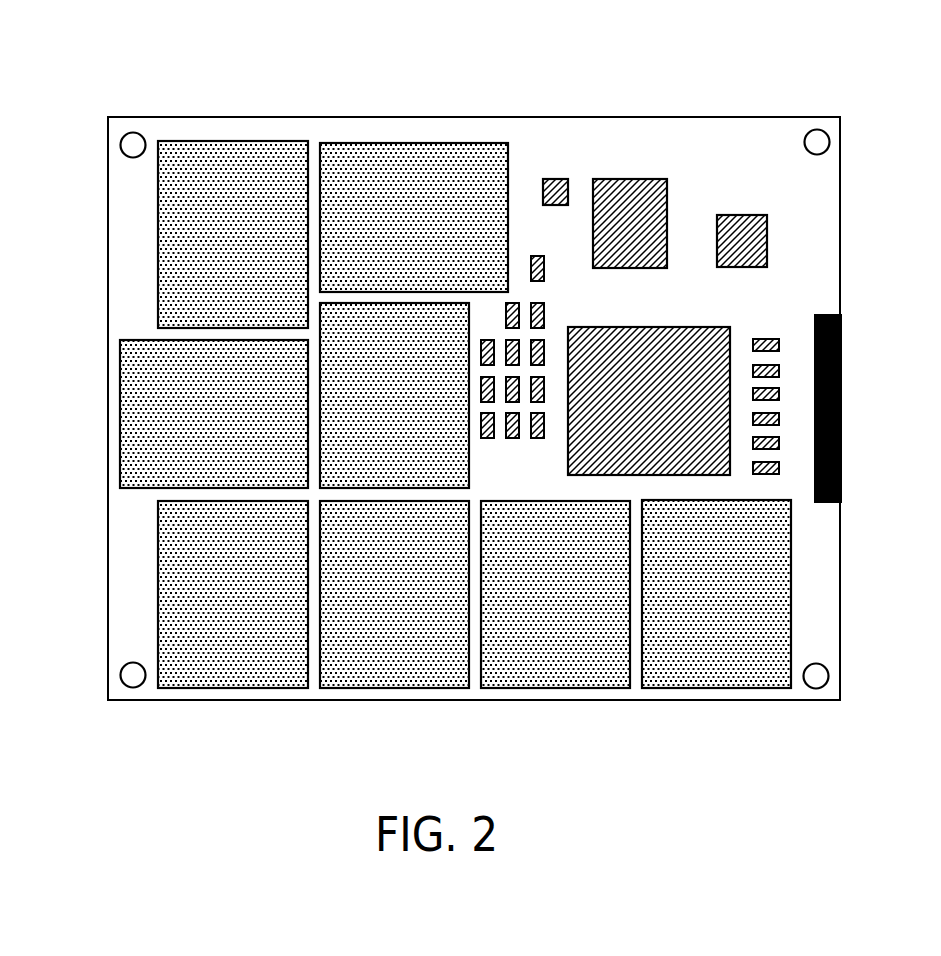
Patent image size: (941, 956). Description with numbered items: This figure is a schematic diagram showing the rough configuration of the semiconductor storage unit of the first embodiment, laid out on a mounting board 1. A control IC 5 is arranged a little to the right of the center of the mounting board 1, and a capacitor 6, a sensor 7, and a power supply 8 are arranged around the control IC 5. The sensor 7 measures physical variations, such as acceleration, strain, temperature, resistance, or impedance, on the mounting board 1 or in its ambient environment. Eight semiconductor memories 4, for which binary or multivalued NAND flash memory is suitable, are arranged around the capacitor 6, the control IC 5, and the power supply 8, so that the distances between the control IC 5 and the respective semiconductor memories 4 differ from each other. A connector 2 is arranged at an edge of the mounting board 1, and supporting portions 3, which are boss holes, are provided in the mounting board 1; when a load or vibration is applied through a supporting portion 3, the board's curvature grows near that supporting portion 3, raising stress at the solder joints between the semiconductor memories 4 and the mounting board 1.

The mounting board 1 is at (817, 237).
The connector 2 is at (842, 405).
The supporting portion 3 is at (818, 128).
The semiconductor memory 4 is at (358, 323).
The control IC 5 is at (636, 347).
The capacitor 6 is at (541, 316).
The sensor 7 is at (552, 178).
The power supply 8 is at (628, 205).